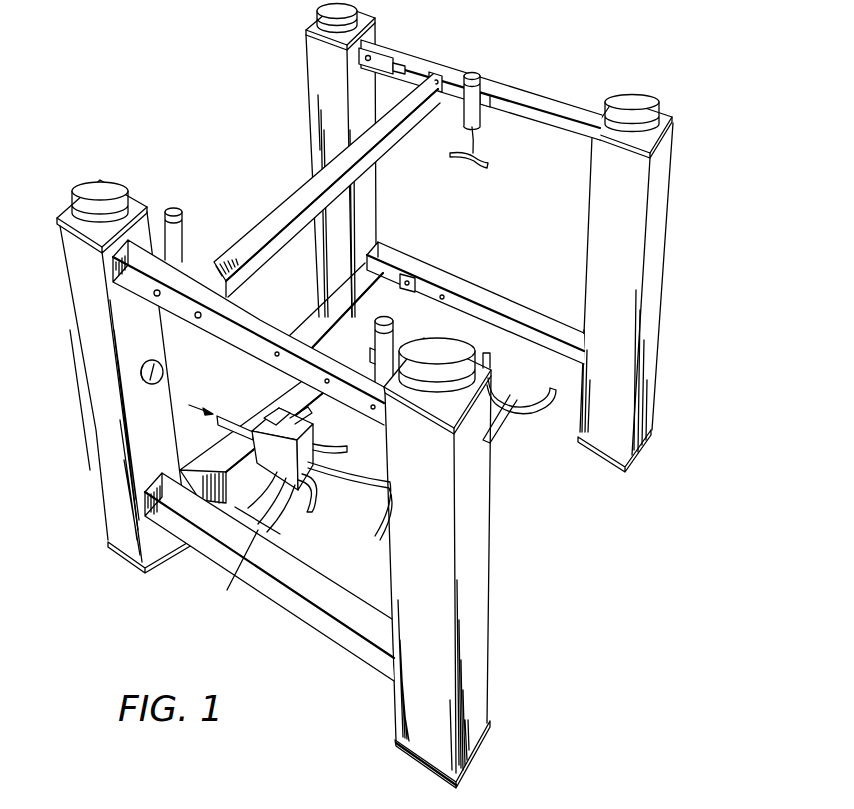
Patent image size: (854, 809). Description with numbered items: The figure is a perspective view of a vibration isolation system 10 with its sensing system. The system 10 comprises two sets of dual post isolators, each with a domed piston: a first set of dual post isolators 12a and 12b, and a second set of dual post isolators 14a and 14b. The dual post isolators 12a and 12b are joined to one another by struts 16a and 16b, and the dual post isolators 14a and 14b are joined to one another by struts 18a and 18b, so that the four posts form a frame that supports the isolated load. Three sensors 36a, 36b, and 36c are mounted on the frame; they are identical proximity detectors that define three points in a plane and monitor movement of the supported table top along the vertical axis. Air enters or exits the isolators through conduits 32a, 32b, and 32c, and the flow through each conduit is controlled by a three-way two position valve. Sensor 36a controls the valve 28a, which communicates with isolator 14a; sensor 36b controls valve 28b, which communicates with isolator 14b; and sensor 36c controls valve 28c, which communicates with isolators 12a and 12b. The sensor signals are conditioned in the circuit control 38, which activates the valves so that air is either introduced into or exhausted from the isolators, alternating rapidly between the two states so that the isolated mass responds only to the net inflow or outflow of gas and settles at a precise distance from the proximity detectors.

The vibration isolation system 10 is at (322, 664).
The dual post isolator 12a is at (376, 22).
The dual post isolator 12b is at (674, 131).
The dual post isolator 14a is at (138, 200).
The dual post isolator 14b is at (488, 548).
The strut 16a is at (534, 90).
The strut 16b is at (479, 288).
The strut 18a is at (230, 332).
The strut 18b is at (290, 608).
The three-way two position valve 28a is at (278, 408).
The valve 28b is at (262, 422).
The valve 28c is at (300, 430).
The conduit 32a is at (320, 495).
The conduit 32b is at (338, 448).
The conduit 32c is at (387, 492).
The sensor 36a is at (185, 217).
The sensor 36b is at (394, 335).
The sensor 36c is at (469, 107).
The circuit control 38 is at (286, 473).